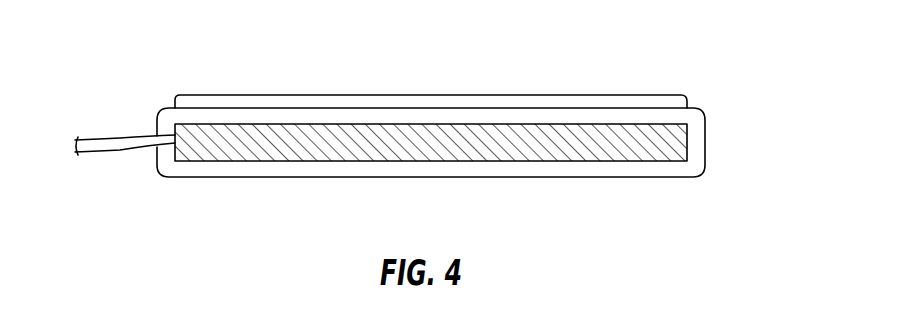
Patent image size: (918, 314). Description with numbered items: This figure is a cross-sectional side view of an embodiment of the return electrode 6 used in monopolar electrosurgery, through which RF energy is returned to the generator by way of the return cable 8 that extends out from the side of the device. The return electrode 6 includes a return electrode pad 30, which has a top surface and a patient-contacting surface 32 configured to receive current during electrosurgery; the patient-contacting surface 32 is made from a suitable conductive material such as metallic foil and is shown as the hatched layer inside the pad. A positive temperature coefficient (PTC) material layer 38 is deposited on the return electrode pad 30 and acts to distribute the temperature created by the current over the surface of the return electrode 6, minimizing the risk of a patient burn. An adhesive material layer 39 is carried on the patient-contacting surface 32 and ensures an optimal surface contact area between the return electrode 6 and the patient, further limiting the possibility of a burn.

The return electrode 6 is at (630, 51).
The return cable 8 is at (122, 135).
The return electrode pad 30 is at (687, 148).
The patient-contacting surface 32 is at (358, 124).
The positive temperature coefficient (PTC) material layer 38 is at (685, 118).
The adhesive material layer 39 is at (689, 105).